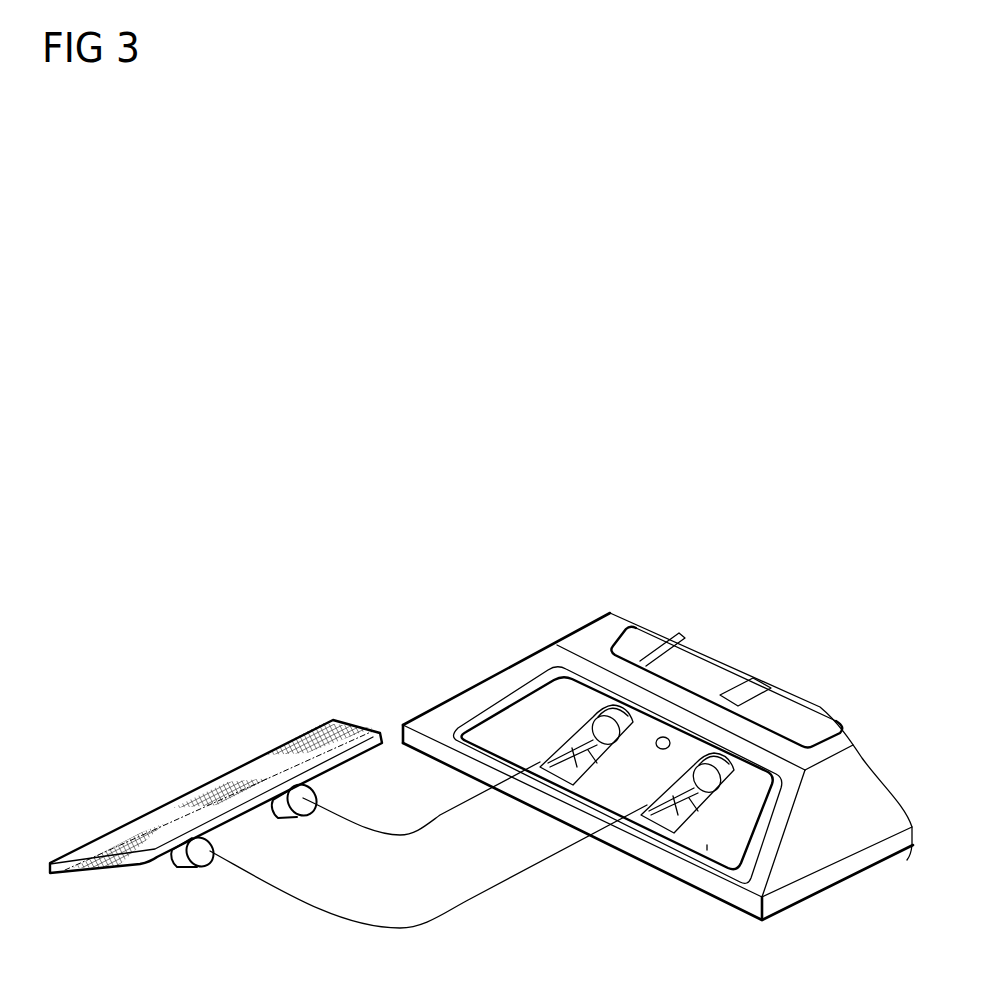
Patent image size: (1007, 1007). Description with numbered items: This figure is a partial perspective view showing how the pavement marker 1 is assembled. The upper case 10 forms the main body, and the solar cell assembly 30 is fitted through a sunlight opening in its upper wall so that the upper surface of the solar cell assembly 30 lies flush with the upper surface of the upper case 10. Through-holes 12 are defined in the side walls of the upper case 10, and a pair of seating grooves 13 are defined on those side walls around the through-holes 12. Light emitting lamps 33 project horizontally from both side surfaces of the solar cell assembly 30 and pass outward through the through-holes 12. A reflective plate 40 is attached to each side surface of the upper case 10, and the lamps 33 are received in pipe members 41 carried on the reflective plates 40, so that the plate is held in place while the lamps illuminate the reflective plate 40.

The vehicle anti-skid apparatus 1 is at (658, 707).
The upper case 10 is at (803, 852).
The through-holes 12 is at (572, 765).
The seating grooves 13 is at (733, 840).
The solar cell assembly 30 is at (722, 670).
The light emitting lamps 33 is at (617, 710).
The reflective plates 40 is at (197, 756).
The pipe members 41 is at (188, 850).